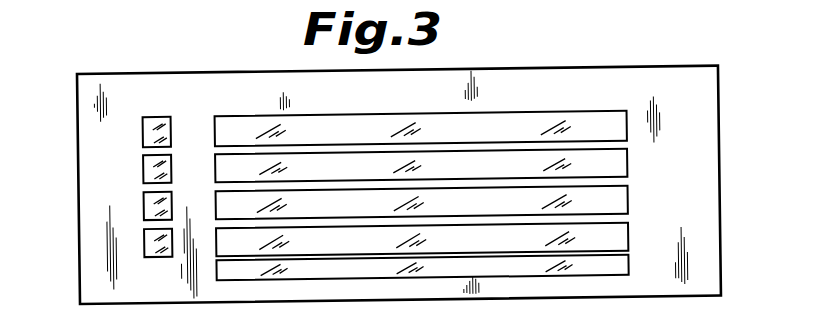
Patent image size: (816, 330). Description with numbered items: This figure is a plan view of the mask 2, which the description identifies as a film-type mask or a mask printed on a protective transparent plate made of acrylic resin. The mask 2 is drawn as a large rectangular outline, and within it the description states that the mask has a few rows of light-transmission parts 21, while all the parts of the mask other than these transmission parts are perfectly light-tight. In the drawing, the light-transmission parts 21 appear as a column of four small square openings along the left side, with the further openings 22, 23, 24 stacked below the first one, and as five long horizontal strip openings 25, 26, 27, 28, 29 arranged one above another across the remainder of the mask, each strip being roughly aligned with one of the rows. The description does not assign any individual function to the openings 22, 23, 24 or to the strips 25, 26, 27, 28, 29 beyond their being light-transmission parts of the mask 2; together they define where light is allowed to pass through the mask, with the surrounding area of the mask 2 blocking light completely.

The mask 2 is at (634, 75).
The light-transmission parts 21 is at (142, 137).
The square electrode 22 is at (142, 173).
The square electrode 23 is at (142, 208).
The square electrode 24 is at (142, 244).
The strip electrode 25 is at (626, 128).
The strip electrode 26 is at (626, 165).
The strip electrode 27 is at (626, 200).
The strip electrode 28 is at (626, 238).
The strip electrode 29 is at (626, 267).